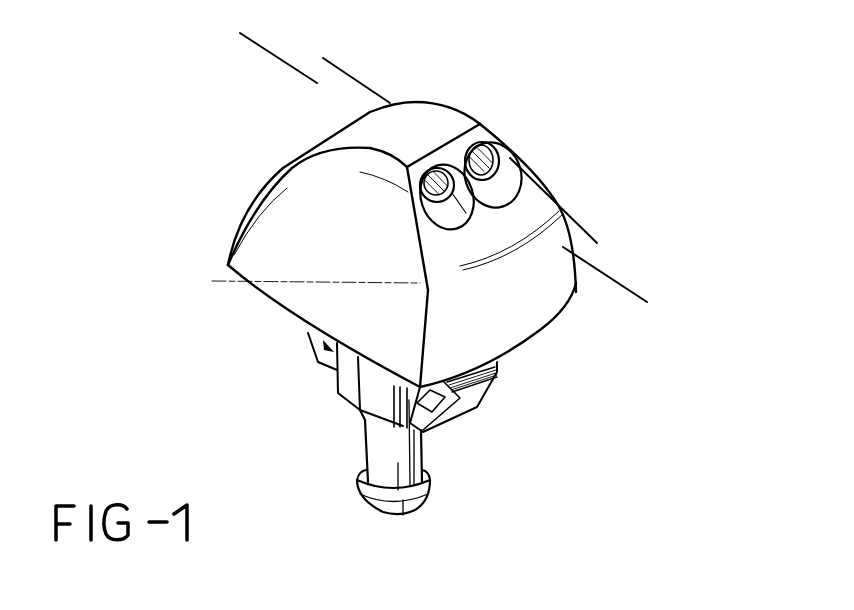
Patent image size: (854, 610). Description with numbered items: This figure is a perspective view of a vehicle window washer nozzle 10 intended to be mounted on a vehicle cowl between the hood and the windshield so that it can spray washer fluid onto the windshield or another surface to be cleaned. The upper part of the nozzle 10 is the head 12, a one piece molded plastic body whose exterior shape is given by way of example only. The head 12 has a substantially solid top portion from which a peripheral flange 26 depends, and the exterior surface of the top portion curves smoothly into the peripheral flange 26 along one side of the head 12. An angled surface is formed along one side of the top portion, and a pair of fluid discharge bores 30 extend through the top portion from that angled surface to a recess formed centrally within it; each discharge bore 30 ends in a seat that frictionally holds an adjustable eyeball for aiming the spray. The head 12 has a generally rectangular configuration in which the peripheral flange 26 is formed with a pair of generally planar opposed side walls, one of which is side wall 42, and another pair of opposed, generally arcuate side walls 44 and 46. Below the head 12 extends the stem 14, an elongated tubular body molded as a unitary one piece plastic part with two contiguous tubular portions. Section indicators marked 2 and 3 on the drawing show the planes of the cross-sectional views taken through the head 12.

The vehicle window washer nozzle 10 is at (557, 25).
The head 12 is at (270, 180).
The stem 14 is at (410, 458).
The peripheral flange 26 is at (288, 235).
The fluid discharge bores 30 is at (510, 160).
The planar side wall 42 is at (347, 300).
The arcuate side wall 44 is at (540, 312).
The arcuate side wall 46 is at (240, 221).
The section line for FIG. 2 is at (250, 62).
The section line for FIG. 3 is at (330, 87).